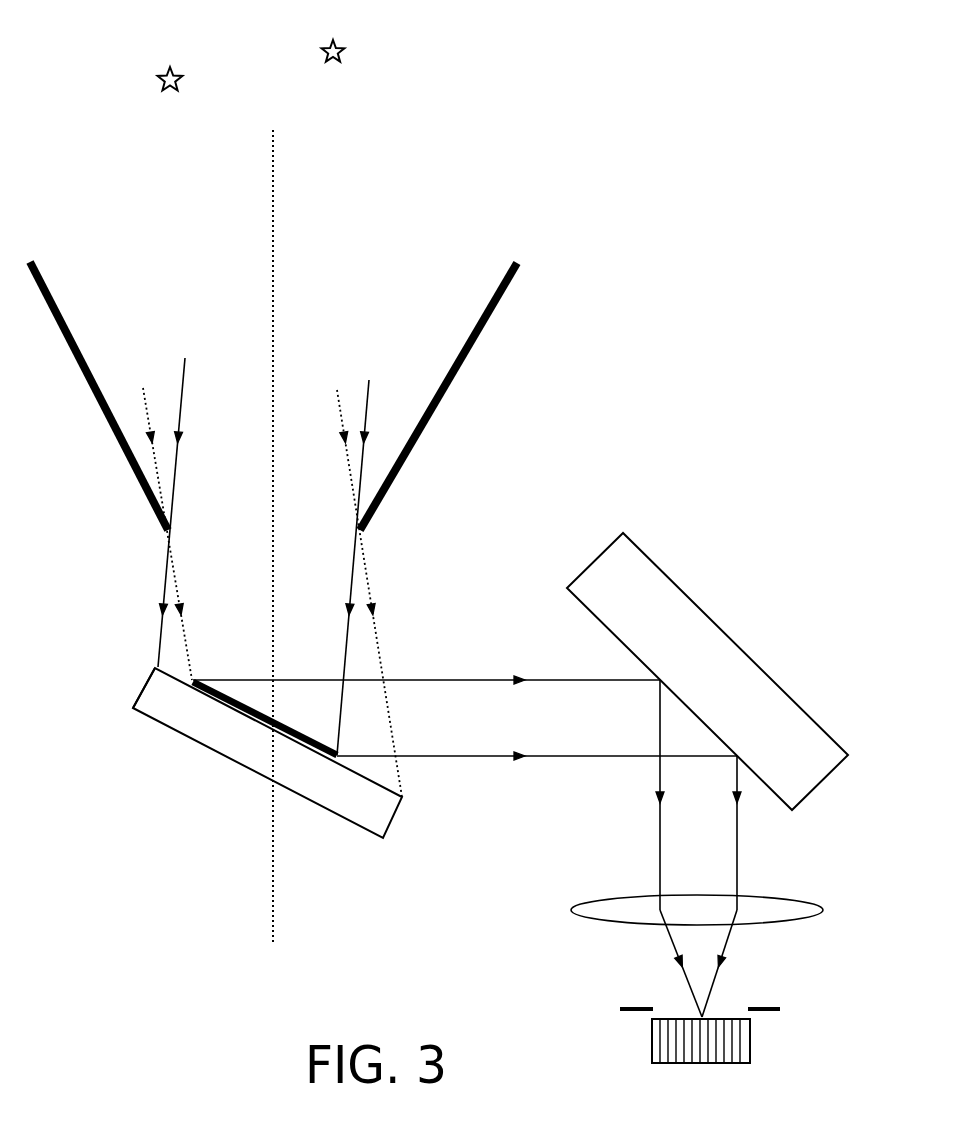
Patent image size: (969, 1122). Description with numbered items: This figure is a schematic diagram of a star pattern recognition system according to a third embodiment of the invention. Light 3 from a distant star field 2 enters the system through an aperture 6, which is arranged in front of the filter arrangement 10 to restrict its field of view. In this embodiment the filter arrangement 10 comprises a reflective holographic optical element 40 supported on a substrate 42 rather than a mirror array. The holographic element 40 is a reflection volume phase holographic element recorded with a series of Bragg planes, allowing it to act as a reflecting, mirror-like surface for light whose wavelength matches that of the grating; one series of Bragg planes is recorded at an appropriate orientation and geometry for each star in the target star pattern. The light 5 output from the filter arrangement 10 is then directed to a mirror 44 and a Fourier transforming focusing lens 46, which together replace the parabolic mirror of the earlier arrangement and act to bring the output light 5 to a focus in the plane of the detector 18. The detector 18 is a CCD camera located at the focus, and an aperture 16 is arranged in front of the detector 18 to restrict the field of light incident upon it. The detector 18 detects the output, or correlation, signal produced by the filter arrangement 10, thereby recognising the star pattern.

The star field 2 is at (312, 44).
The light 3 is at (346, 383).
The light output 5 is at (460, 676).
The aperture 6 is at (77, 373).
The filter arrangement 10 is at (140, 745).
The aperture 16 is at (608, 1006).
The detector 18 is at (643, 1058).
The reflective holographic optical element 40 is at (225, 690).
The substrate 42 is at (135, 686).
The mirror 44 is at (660, 556).
The Fourier transforming focusing lens 46 is at (568, 908).